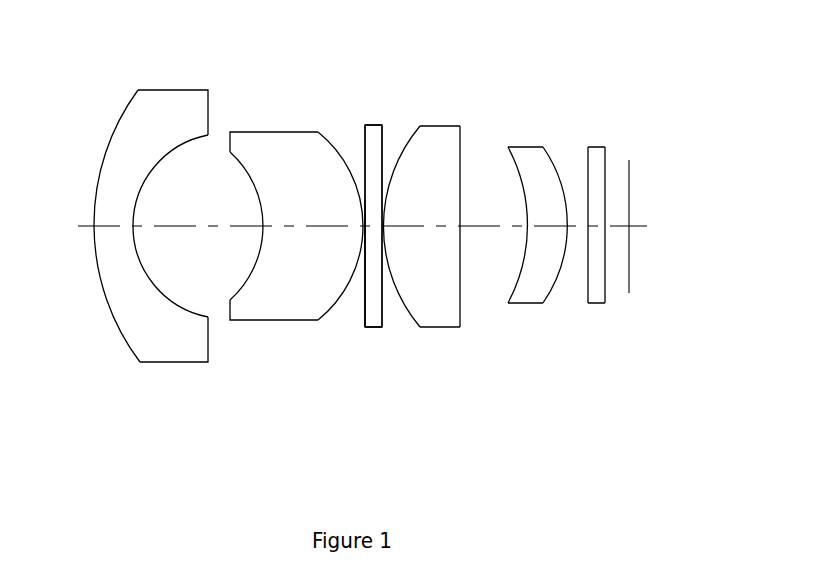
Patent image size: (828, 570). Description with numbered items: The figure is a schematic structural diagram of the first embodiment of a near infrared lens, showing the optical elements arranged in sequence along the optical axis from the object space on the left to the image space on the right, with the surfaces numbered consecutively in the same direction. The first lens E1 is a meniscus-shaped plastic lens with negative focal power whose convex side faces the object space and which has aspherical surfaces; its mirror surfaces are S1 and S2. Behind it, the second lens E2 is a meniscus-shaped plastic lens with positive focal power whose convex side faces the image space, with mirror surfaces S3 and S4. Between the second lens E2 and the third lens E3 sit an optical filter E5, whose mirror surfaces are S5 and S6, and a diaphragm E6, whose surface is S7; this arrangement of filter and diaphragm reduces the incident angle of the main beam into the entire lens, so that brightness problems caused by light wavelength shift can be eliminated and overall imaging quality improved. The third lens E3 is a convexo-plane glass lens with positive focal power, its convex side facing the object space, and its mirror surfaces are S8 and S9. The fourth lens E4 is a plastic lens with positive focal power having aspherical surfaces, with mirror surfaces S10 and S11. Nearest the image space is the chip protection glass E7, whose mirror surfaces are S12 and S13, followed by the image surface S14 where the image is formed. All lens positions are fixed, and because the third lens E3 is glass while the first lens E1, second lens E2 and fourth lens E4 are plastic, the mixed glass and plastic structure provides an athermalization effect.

The first lens E1 is at (173, 90).
The second lens E2 is at (273, 130).
The third lens E3 is at (440, 127).
The fourth lens E4 is at (527, 147).
The optical filter E5 is at (365, 143).
The diaphragm E6 is at (376, 125).
The chip protection glass E7 is at (597, 147).
The mirror surface of the first lens S1 is at (94, 226).
The mirror surface of the first lens S2 is at (127, 226).
The mirror surface of the second lens S3 is at (263, 226).
The mirror surface of the second lens S4 is at (363, 227).
The mirror surface of the optical filter S5 is at (365, 305).
The mirror surface of the optical filter S6 is at (365, 327).
The surface of the diaphragm S7 is at (382, 327).
The mirror surface of the third lens S8 is at (384, 230).
The mirror surface of the third lens S9 is at (460, 327).
The mirror surface of the fourth lens S10 is at (528, 226).
The mirror surface of the fourth lens S11 is at (568, 226).
The mirror surface of the chip protection glass S12 is at (589, 303).
The mirror surface of the chip protection glass S13 is at (605, 226).
The image surface S14 is at (629, 226).